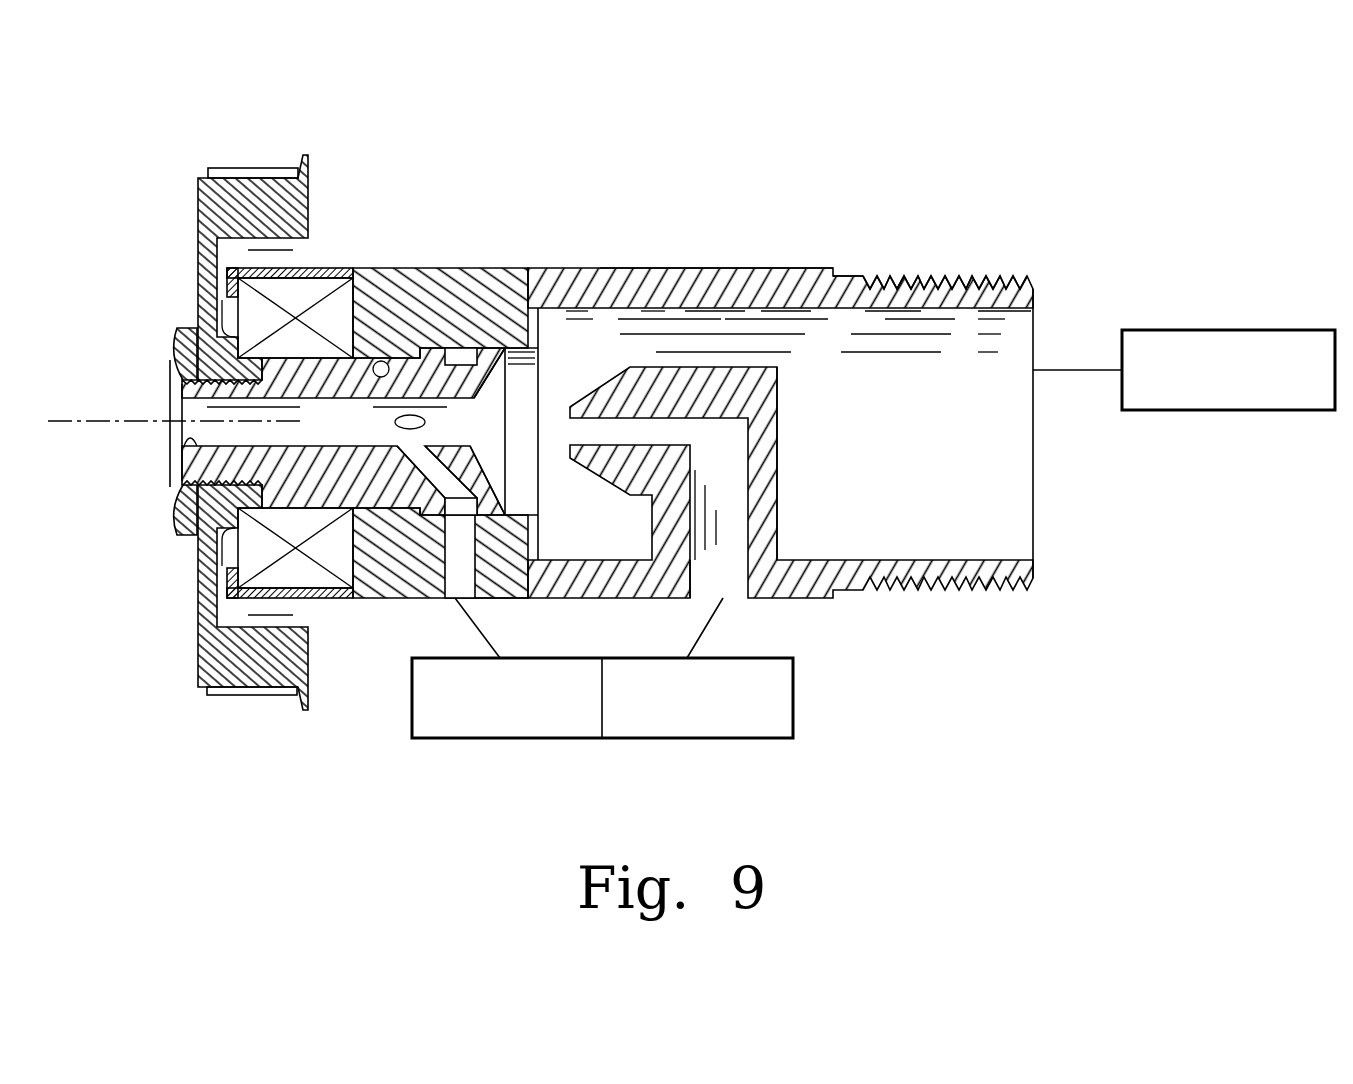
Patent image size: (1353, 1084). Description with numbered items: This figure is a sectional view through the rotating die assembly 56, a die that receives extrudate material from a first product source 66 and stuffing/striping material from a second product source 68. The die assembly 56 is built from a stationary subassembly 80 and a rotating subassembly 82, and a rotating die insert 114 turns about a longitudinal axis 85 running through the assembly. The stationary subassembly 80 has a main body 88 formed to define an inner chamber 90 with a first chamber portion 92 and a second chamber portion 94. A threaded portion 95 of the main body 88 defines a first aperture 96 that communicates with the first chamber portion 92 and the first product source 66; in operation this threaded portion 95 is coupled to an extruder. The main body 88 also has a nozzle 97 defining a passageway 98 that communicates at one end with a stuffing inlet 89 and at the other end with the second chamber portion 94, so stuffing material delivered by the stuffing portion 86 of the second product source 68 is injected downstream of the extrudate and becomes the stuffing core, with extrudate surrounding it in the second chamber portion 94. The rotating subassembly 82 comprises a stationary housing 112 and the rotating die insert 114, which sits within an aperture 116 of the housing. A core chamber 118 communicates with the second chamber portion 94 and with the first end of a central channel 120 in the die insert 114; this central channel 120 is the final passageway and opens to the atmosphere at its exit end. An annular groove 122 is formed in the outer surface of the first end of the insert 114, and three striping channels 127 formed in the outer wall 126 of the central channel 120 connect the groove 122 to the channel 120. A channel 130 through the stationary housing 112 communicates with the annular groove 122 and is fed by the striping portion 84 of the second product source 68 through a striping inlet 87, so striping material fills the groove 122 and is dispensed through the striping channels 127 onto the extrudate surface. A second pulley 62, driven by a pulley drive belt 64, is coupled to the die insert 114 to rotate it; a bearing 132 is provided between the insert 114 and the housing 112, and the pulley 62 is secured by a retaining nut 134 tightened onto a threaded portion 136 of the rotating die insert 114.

The rotating die assembly 56 is at (1022, 150).
The second pulley 62 is at (203, 193).
The pulley drive belt 64 is at (248, 697).
The first product source 66 is at (1273, 338).
The second product source 68 is at (802, 702).
The stationary subassembly 80 is at (782, 241).
The rotating subassembly 82 is at (478, 240).
The striping portion 84 is at (507, 738).
The longitudinal axis 85 is at (82, 418).
The stuffing portion 86 is at (708, 738).
The striping inlet 87 is at (490, 598).
The main body 88 is at (715, 272).
The stuffing inlet 89 is at (698, 600).
The inner chamber 90 is at (808, 355).
The first chamber portion 92 is at (960, 366).
The second chamber portion 94 is at (585, 356).
The threaded portion 95 is at (920, 273).
The first aperture 96 is at (1030, 556).
The nozzle 97 is at (790, 462).
The passageway 98 is at (730, 586).
The stationary housing 112 is at (420, 268).
The rotating die insert 114 is at (185, 452).
The aperture 116 is at (390, 360).
The core chamber 118 is at (497, 420).
The central channel 120 is at (208, 410).
The annular groove 122 is at (467, 346).
The outer wall 126 is at (190, 437).
The striping channels 127 is at (412, 455).
The channel 130 is at (456, 592).
The bearing 132 is at (250, 312).
The retaining nut 134 is at (185, 338).
The threaded portion 136 is at (185, 466).